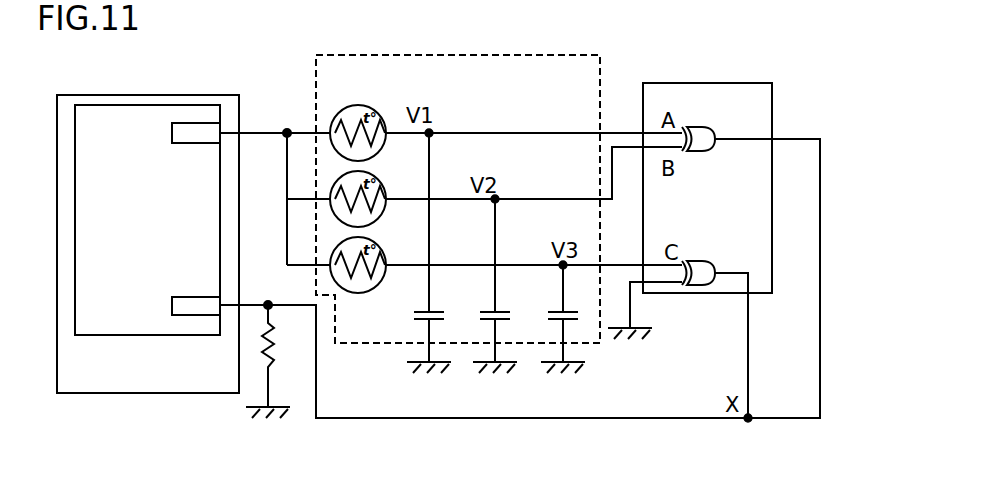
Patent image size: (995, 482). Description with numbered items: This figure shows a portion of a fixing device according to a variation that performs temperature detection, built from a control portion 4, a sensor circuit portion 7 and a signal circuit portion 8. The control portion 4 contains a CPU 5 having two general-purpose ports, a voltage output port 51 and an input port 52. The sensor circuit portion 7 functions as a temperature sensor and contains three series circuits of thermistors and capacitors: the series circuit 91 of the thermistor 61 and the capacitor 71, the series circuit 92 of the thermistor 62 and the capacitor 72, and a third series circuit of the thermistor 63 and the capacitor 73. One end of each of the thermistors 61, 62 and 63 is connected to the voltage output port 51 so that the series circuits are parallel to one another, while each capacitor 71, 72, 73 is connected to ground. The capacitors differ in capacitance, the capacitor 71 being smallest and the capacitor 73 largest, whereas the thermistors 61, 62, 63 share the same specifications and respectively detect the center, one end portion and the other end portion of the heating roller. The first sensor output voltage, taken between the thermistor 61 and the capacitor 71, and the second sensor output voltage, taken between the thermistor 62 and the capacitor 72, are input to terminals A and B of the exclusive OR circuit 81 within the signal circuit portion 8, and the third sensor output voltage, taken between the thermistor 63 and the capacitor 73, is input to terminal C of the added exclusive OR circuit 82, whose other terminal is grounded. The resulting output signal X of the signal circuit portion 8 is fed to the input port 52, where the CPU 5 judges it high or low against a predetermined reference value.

The control portion 4 is at (241, 103).
The CPU 5 is at (221, 221).
The voltage output port 51 is at (172, 133).
The input port 52 is at (172, 306).
The thermistor 61 is at (350, 108).
The thermistor 62 is at (381, 184).
The thermistor 63 is at (382, 251).
The sensor circuit portion 7 is at (350, 347).
The capacitor 71 is at (427, 311).
The capacitor 72 is at (492, 311).
The capacitor 73 is at (560, 311).
The signal circuit portion 8 is at (773, 92).
The exclusive OR circuit 81 is at (705, 139).
The exclusive OR circuit 82 is at (706, 272).
The series circuit 91 is at (400, 127).
The series circuit 92 is at (452, 196).